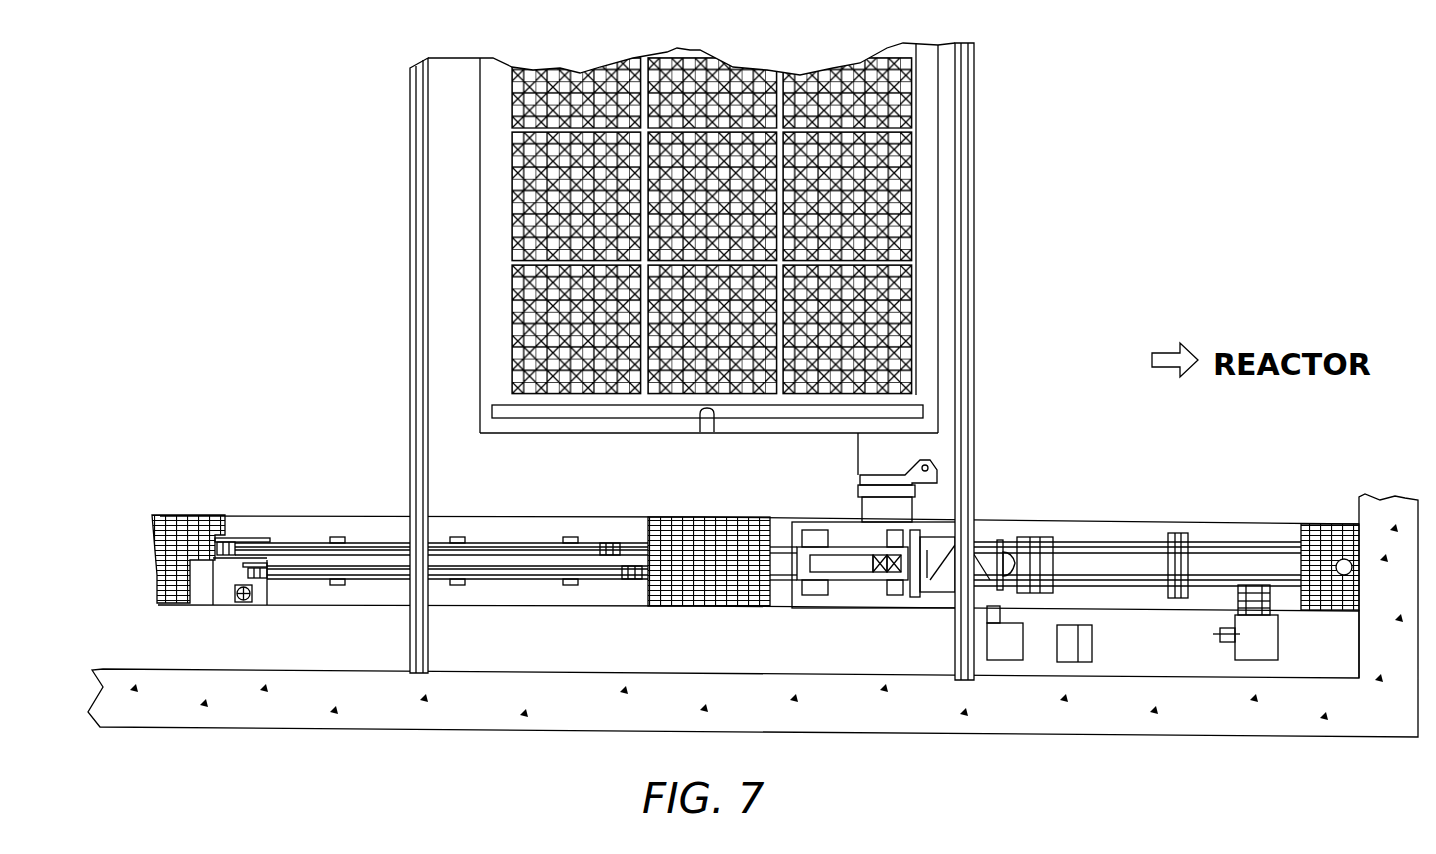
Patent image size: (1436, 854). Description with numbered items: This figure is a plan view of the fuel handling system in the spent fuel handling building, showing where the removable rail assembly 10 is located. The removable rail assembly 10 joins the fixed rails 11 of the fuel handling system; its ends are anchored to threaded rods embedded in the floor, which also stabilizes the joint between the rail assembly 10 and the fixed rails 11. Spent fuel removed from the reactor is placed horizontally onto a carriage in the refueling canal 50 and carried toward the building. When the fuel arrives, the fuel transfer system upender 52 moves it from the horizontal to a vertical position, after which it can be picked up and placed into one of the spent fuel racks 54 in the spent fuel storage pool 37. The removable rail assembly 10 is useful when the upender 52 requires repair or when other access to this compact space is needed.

The removable rail assembly 10 is at (392, 637).
The fixed rails 11 is at (412, 361).
The spent fuel storage pool 37 is at (925, 208).
The refueling canal 50 is at (1197, 531).
The fuel transfer system upender 52 is at (880, 560).
The spent fuel racks 54 is at (914, 283).